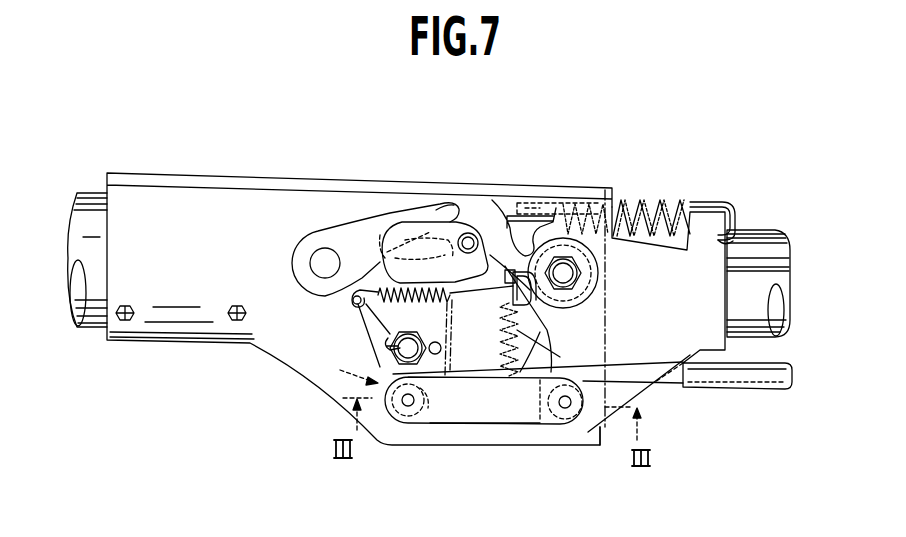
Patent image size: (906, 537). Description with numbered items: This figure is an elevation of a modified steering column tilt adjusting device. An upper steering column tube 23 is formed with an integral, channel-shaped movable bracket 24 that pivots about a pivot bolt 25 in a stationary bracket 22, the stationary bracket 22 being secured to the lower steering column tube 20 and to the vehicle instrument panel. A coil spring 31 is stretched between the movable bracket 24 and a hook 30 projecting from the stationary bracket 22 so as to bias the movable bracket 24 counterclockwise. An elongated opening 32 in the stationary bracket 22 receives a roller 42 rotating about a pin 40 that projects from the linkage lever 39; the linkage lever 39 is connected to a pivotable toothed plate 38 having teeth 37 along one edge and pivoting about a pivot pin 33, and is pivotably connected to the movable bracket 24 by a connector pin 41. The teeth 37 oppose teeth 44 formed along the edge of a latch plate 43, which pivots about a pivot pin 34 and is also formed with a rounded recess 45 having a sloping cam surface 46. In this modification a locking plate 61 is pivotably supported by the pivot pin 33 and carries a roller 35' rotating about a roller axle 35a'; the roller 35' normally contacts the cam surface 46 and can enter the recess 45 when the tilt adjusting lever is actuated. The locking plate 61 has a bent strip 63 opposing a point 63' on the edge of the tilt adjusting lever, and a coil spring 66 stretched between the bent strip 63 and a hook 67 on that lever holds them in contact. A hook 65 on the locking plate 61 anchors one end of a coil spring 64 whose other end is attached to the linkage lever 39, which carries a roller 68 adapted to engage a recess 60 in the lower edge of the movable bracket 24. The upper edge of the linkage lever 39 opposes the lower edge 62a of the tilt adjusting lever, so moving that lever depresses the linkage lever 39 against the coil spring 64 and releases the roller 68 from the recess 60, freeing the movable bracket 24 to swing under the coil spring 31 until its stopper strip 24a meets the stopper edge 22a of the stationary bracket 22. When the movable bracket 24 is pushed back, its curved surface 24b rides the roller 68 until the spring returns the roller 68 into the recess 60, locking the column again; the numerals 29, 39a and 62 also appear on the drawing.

The lower steering column tube 20 is at (95, 192).
The stationary bracket 22 is at (157, 172).
The stopper edge 22a is at (610, 190).
The upper steering column tube 23 is at (773, 230).
The movable bracket 24 is at (705, 337).
The stopper strip 24a is at (627, 200).
The curved surface 24b is at (530, 428).
The pivot bolt 25 is at (580, 273).
The pin 29 is at (733, 236).
The hook 30 is at (553, 212).
The coil spring 31 is at (690, 205).
The elongated opening 32 is at (422, 416).
The pivot pin 33 is at (388, 345).
The pivot pin 34 is at (310, 262).
The roller 35' is at (527, 204).
The roller axle 35a' is at (553, 166).
The teeth 37 is at (378, 212).
The toothed plate 38 is at (343, 370).
The linkage lever 39 is at (476, 426).
The plate portion 39a is at (538, 428).
The pin 40 is at (402, 412).
The connector pin 41 is at (567, 412).
The roller 42 is at (427, 420).
The latch plate 43 is at (350, 207).
The teeth 44 is at (410, 212).
The rounded recess 45 is at (433, 208).
The cam surface 46 is at (458, 206).
The recess 60 is at (548, 336).
The locking plate 61 is at (473, 232).
The link arm 62 is at (660, 390).
The lower edge 62a is at (517, 373).
The bent strip 63 is at (371, 327).
The point 63' is at (461, 300).
The coil spring 64 is at (535, 305).
The hook 65 is at (578, 292).
The coil spring 66 is at (350, 228).
The hook 67 is at (485, 302).
The roller 68 is at (596, 432).